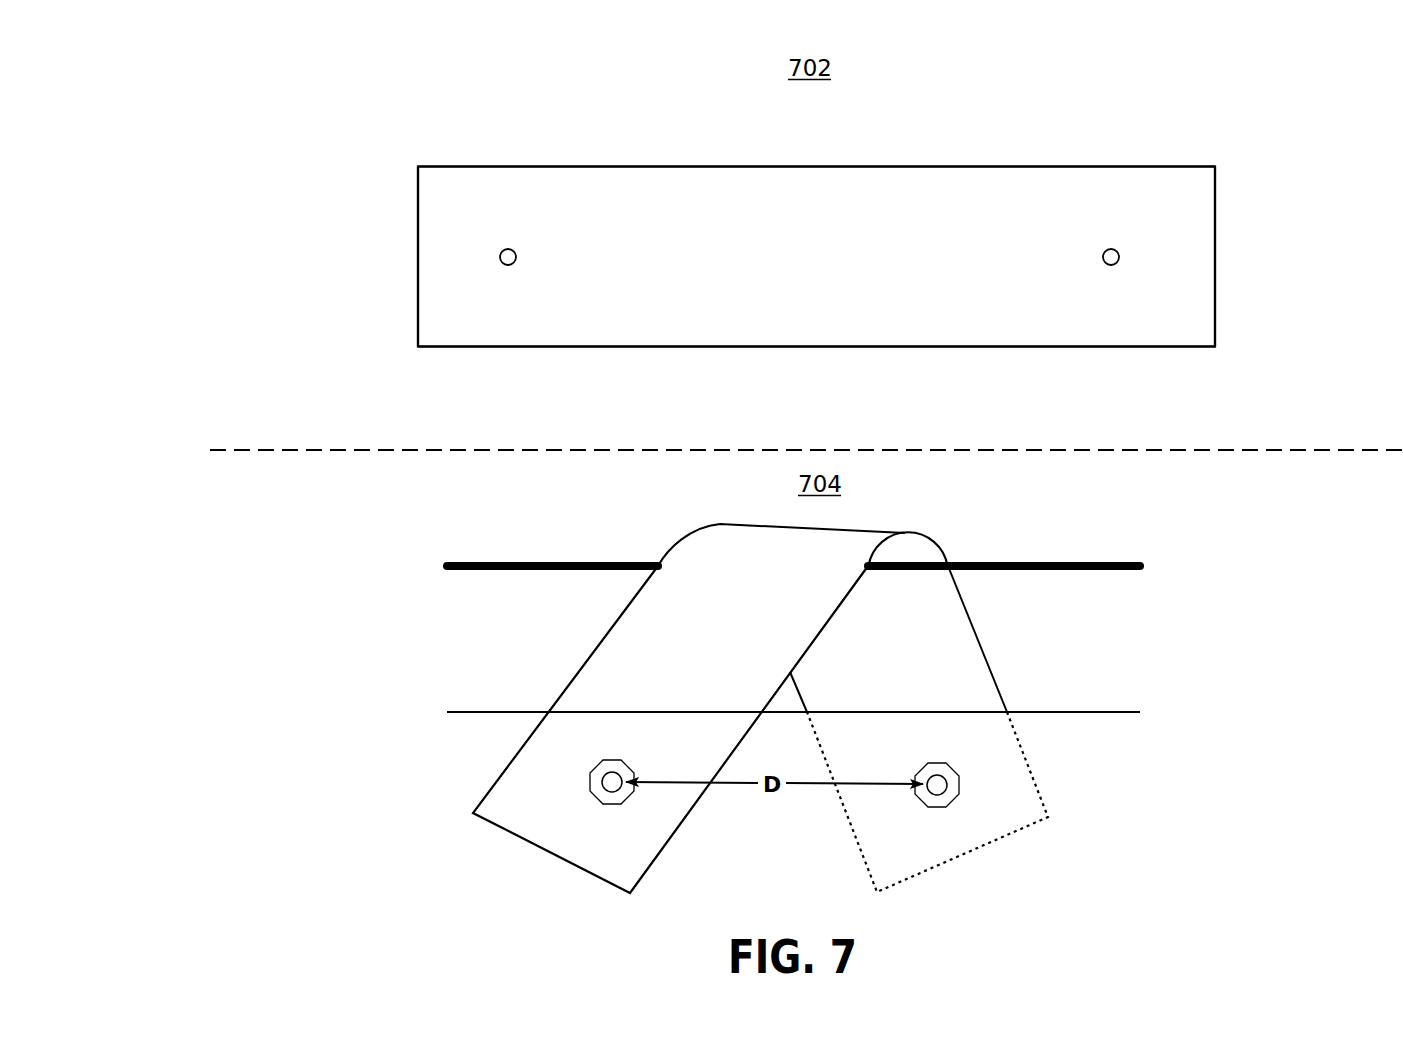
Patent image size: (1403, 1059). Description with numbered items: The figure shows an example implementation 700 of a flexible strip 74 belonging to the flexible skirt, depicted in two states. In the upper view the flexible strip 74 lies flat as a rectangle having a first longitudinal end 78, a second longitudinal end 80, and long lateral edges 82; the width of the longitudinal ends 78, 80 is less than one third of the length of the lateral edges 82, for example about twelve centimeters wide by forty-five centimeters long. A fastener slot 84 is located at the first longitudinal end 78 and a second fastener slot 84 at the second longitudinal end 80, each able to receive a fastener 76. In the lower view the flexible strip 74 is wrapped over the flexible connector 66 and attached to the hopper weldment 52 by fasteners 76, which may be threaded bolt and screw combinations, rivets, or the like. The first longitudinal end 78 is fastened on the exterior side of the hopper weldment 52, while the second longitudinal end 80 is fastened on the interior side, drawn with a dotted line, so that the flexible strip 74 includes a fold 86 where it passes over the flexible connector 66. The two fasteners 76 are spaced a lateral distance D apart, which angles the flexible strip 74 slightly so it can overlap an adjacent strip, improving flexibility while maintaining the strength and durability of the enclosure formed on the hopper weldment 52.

The example implementation 700 is at (281, 81).
The flexible strip 74 is at (464, 121).
The first longitudinal end 78 is at (400, 262).
The second longitudinal end 80 is at (1229, 242).
The lateral edges 82 is at (698, 161).
The fastener slot 84 is at (1110, 265).
The fold 86 is at (918, 531).
The flexible connector 66 is at (558, 566).
The hopper weldment 52 is at (495, 706).
The fastener 76 is at (612, 804).